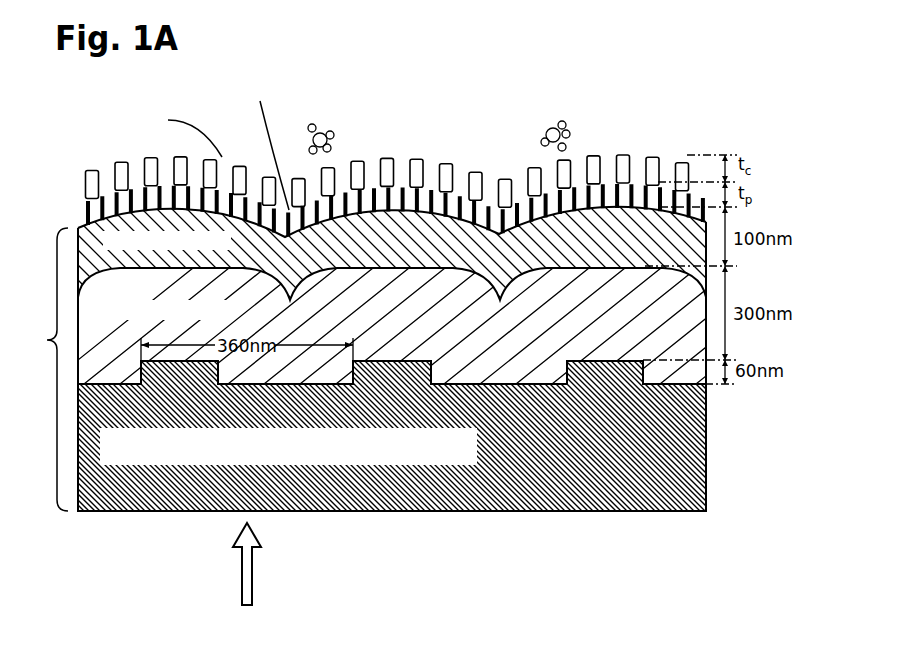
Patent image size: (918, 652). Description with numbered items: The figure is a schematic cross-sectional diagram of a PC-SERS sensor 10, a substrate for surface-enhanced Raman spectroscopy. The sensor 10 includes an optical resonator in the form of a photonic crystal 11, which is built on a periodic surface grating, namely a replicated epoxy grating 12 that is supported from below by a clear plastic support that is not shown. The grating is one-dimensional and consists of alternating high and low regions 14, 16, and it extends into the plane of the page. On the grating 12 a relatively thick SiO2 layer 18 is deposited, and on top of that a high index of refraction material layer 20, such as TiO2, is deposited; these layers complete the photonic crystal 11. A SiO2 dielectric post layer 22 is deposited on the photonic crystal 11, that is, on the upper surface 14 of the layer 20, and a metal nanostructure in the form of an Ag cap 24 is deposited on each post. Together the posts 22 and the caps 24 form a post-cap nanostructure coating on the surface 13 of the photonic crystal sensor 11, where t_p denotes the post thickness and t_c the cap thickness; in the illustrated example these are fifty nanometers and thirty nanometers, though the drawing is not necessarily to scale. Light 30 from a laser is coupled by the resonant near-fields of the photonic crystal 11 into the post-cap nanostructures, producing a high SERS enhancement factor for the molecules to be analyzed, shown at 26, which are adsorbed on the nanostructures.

The PC-SERS sensor 10 is at (822, 236).
The photonic crystal 11 is at (46, 340).
The replicated epoxy grating 12 is at (695, 468).
The surface of the PC sensor 13 is at (79, 227).
The high regions 14 is at (403, 358).
The low regions 16 is at (533, 375).
The SiO2 layer 18 is at (678, 323).
The high index of refraction material layer 20 is at (703, 238).
The SiO2 dielectric post layer 22 is at (700, 216).
The Ag cap 24 is at (672, 158).
The molecules to be analyzed 26 is at (333, 133).
The light 30 is at (240, 560).